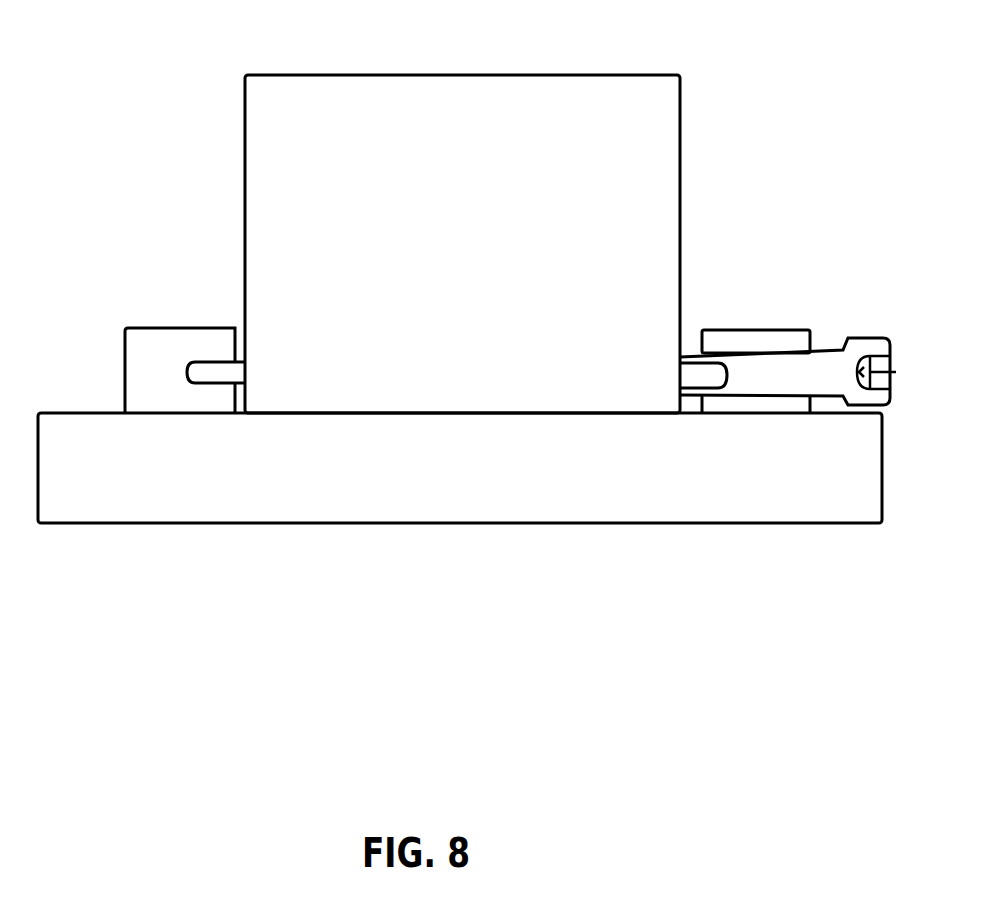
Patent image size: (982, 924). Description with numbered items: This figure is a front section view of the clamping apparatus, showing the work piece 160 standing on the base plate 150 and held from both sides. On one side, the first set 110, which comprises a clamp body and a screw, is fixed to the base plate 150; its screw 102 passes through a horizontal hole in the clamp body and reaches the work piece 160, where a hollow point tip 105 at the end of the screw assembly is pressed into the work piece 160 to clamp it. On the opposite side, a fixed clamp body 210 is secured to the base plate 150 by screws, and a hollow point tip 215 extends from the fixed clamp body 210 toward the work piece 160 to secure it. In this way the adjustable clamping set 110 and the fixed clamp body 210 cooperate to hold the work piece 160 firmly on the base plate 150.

The base plate 150 is at (388, 503).
The work piece 160 is at (418, 102).
The fixed clamp body 210 is at (165, 365).
The hollow point tip 215 is at (223, 370).
The first set 110 is at (748, 340).
The screw 102 is at (817, 362).
The hollow point tip 105 is at (688, 375).